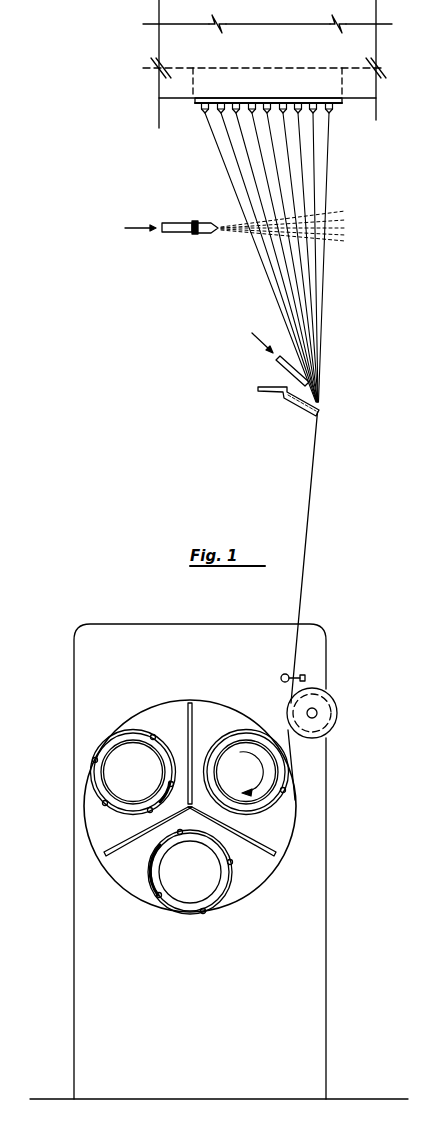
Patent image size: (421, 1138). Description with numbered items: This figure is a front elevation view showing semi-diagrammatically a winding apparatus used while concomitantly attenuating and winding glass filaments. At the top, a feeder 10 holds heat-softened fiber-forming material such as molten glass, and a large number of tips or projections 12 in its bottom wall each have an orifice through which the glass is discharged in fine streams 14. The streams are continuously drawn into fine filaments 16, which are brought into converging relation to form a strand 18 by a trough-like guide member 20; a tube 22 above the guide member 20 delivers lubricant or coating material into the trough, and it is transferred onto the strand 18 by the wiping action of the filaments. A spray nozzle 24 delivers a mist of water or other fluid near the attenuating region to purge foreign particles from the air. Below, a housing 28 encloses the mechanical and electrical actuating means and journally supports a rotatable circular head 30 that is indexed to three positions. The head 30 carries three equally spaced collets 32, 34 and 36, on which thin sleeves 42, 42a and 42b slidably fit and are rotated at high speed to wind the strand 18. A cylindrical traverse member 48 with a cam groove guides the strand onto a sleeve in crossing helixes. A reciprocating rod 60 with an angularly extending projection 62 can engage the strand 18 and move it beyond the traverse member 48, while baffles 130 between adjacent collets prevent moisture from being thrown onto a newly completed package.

The feeder 10 is at (190, 96).
The tips or projections 12 is at (306, 112).
The streams 14 is at (251, 114).
The filaments or fibers 16 is at (310, 158).
The strand 18 is at (312, 465).
The guide member 20 is at (304, 403).
The tube 22 is at (279, 370).
The spray nozzle 24 is at (199, 221).
The housing 28 is at (327, 640).
The circular member or head 30 is at (296, 813).
The collet or arbor 32 is at (272, 769).
The collet or arbor 34 is at (165, 868).
The collet or arbor 36 is at (108, 797).
The sleeve 42 is at (283, 791).
The sleeve 42a is at (92, 768).
The sleeve 42b is at (154, 893).
The traverse member 48 is at (336, 701).
The secondary strand guiding member or rod 60 is at (287, 674).
The angularly extending projection 62 is at (305, 676).
The baffles 130 is at (192, 706).